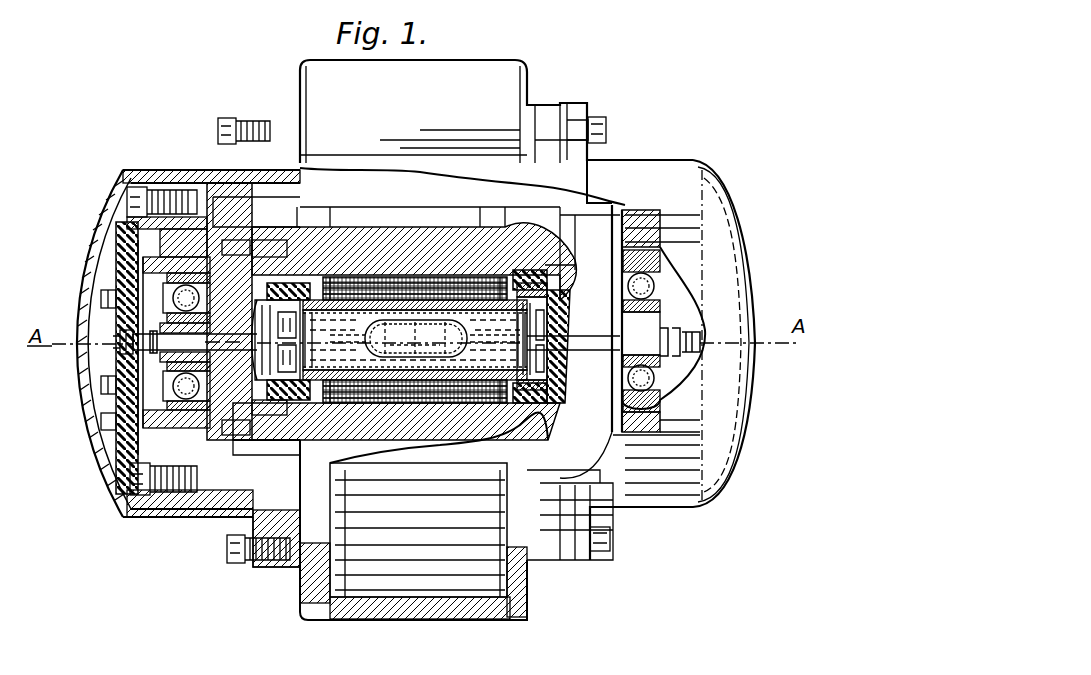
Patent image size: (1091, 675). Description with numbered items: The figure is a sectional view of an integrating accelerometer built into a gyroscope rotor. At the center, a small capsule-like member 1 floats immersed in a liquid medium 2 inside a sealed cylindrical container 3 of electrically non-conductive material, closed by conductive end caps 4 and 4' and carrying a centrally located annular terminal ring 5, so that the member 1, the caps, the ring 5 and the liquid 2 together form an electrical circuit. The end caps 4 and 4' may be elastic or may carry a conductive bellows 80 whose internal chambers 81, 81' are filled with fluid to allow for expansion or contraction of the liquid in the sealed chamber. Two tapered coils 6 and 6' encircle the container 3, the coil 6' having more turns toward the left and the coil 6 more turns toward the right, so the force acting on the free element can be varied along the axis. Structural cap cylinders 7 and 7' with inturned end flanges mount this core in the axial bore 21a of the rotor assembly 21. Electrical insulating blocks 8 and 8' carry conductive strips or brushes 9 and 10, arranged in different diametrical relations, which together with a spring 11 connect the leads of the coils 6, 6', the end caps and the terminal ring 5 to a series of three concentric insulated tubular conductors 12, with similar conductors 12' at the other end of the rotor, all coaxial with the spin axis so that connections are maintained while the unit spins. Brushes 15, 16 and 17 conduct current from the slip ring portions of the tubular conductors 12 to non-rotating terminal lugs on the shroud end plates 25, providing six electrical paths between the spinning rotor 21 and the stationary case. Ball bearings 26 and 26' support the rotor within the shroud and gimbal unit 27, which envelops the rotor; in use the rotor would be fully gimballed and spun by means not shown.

The capsule-like member 1 is at (522, 357).
The liquid medium 2 is at (532, 312).
The cylindrical container 3 is at (548, 374).
The end cap 4 is at (453, 166).
The end cap 4' is at (581, 253).
The annular terminal ring 5 is at (410, 364).
The coil 6 is at (415, 324).
The coil 6' is at (415, 311).
The structural cap cylinder 7 is at (254, 243).
The structural cap cylinder 7' is at (536, 252).
The electrical insulating block 8 is at (254, 443).
The electrical insulating block 8' is at (549, 391).
The conductive strip 9 is at (262, 283).
The conductive strip 10 is at (262, 443).
The spring 11 is at (314, 455).
The concentric insulated tubular conductors 12 is at (166, 368).
The concentric insulated tubular conductors 12' is at (658, 318).
The brush 15 is at (148, 355).
The brush 16 is at (152, 365).
The brush 17 is at (143, 326).
The rotor assembly 21 is at (378, 458).
The axial bore 21a is at (500, 242).
The shroud end plate 25 is at (122, 400).
The ball bearing 26 is at (124, 310).
The ball bearing 26' is at (671, 326).
The shroud and gimbal unit 27 is at (272, 566).
The bellows 80 is at (425, 337).
The internal chamber 81 is at (321, 340).
The internal chamber 81' is at (508, 340).